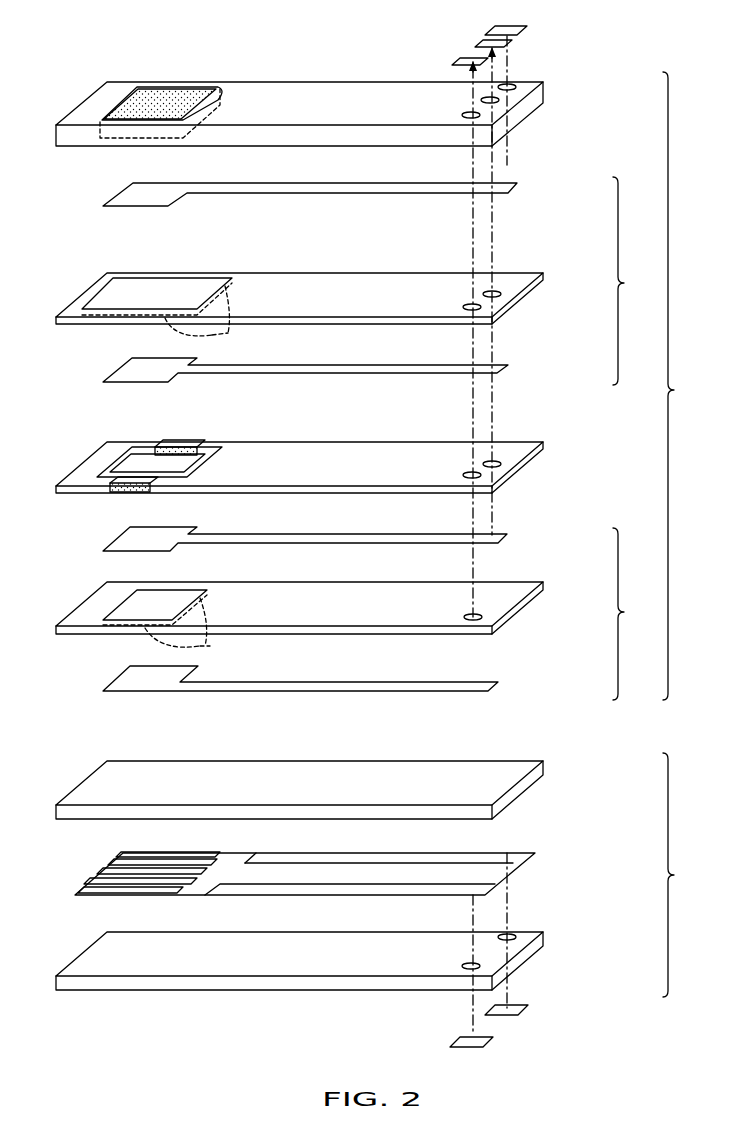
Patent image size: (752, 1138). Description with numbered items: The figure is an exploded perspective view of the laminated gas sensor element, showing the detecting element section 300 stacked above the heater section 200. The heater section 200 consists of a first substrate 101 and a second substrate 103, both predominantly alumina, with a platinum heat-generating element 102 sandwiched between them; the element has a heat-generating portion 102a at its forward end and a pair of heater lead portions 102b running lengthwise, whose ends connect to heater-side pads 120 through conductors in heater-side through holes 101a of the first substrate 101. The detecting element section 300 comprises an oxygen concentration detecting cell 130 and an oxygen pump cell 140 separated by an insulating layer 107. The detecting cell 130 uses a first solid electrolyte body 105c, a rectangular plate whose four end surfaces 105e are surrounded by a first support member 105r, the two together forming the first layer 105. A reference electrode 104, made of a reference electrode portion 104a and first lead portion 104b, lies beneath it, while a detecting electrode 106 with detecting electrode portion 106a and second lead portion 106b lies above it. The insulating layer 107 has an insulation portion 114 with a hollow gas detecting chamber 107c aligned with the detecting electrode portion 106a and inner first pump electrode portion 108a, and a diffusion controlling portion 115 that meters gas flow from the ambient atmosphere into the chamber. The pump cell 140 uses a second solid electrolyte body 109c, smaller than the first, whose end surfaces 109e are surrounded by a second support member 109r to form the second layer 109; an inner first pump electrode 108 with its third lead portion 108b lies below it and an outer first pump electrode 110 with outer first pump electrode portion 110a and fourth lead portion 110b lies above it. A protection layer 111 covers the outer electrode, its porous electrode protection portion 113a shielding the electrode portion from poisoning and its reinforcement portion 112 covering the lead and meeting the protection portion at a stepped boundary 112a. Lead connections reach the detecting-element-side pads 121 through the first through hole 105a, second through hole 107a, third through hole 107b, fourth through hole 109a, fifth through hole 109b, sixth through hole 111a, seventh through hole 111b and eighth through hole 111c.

The first substrate 101 is at (535, 968).
The heater-side through holes 101a is at (478, 962).
The heat-generating element 102 is at (530, 873).
The heat-generating portion 102a is at (110, 875).
The heater lead portions 102b is at (340, 890).
The second substrate 103 is at (538, 798).
The reference electrode 104 is at (515, 686).
The reference electrode portion 104a is at (148, 677).
The first lead portion 104b is at (345, 685).
The first layer 105 is at (538, 608).
The first through hole 105a is at (464, 617).
The first solid electrolyte body 105c is at (130, 600).
The end surfaces of first solid electrolyte body 105e is at (208, 647).
The first support member 105r is at (351, 592).
The detecting electrode 106 is at (530, 538).
The detecting electrode portion 106a is at (150, 537).
The second lead portion 106b is at (345, 537).
The insulating layer 107 is at (533, 475).
The second through hole 107a is at (463, 475).
The third through hole 107b is at (483, 464).
The gas detecting chamber 107c is at (187, 466).
The inner first pump electrode 108 is at (525, 371).
The inner first pump electrode portion 108a is at (150, 368).
The third lead portion 108b is at (345, 368).
The second layer 109 is at (537, 302).
The fourth through hole 109a is at (463, 307).
The fifth through hole 109b is at (483, 294).
The second solid electrolyte body 109c is at (165, 284).
The end surfaces of second solid electrolyte body 109e is at (230, 333).
The second support member 109r is at (342, 285).
The outer first pump electrode 110 is at (535, 188).
The outer first pump electrode portion 110a is at (150, 192).
The fourth lead portion 110b is at (345, 186).
The protection layer 111 is at (533, 125).
The sixth through hole 111a is at (462, 115).
The seventh through hole 111b is at (481, 100).
The eighth through hole 111c is at (515, 87).
The reinforcement portion 112 is at (285, 90).
The boundary 112a is at (198, 112).
The electrode protection portion 113a is at (155, 93).
The insulation portion 114 is at (292, 447).
The diffusion controlling portion 115 is at (175, 445).
The heater-side pads 120 is at (488, 1040).
The detecting-element-side pads 121 is at (490, 31).
The oxygen concentration detecting cell 130 is at (636, 614).
The oxygen pump cell 140 is at (636, 281).
The heater section 200 is at (689, 875).
The detecting element section 300 is at (689, 386).